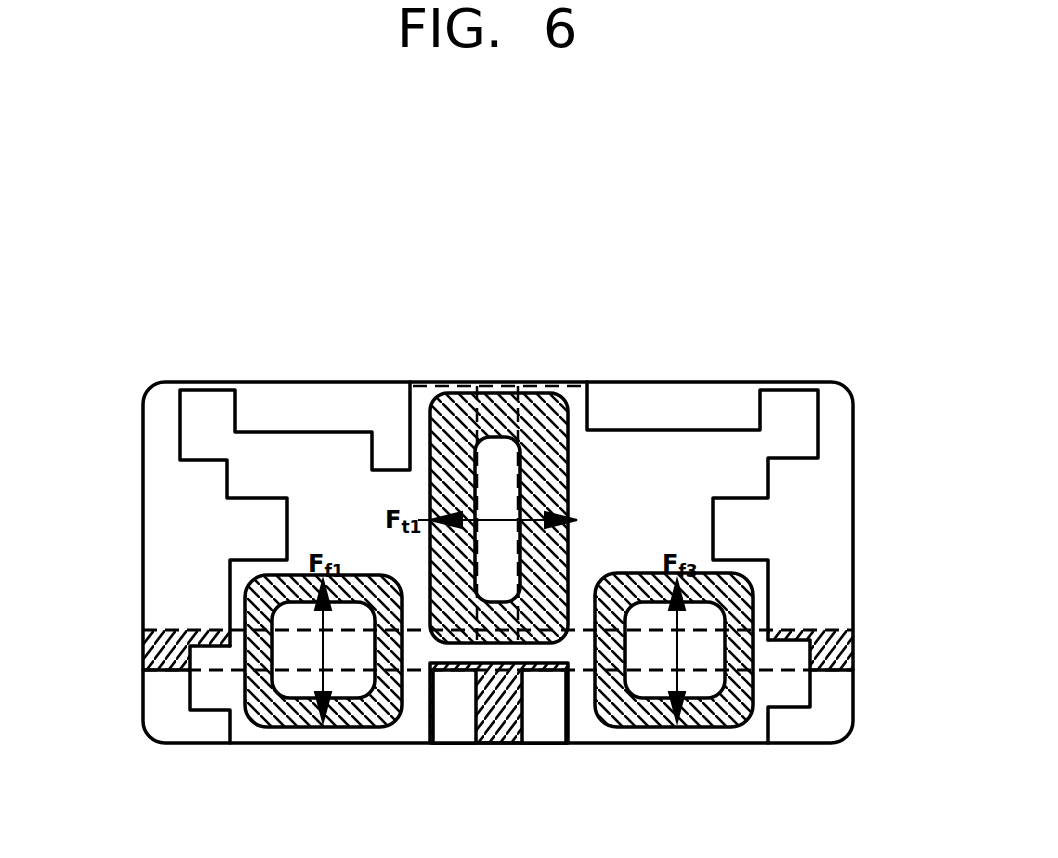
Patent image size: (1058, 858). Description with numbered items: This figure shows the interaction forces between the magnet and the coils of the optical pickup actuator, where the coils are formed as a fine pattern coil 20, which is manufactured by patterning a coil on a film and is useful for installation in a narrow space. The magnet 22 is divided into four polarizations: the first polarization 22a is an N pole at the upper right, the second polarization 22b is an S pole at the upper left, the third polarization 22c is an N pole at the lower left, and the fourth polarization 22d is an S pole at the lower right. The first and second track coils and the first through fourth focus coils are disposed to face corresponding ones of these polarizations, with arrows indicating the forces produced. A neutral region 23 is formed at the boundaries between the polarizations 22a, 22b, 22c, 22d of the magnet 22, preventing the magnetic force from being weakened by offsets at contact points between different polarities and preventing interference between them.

The fine pattern coil 20 is at (707, 428).
The magnet 22 is at (498, 561).
The first polarization 22a is at (847, 467).
The second polarization 22b is at (155, 468).
The third polarization 22c is at (183, 732).
The fourth polarization 22d is at (815, 728).
The neutral region 23 is at (853, 650).